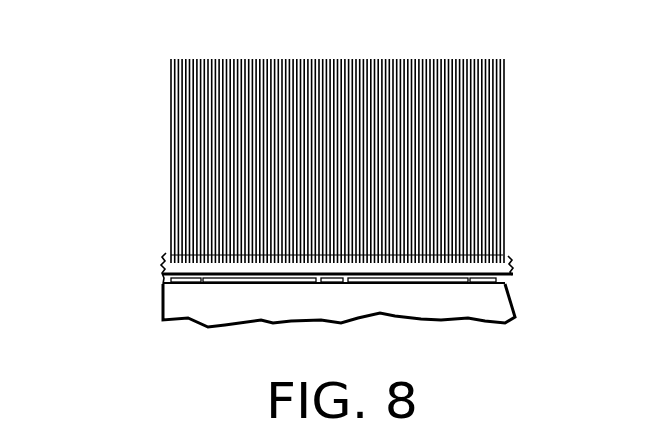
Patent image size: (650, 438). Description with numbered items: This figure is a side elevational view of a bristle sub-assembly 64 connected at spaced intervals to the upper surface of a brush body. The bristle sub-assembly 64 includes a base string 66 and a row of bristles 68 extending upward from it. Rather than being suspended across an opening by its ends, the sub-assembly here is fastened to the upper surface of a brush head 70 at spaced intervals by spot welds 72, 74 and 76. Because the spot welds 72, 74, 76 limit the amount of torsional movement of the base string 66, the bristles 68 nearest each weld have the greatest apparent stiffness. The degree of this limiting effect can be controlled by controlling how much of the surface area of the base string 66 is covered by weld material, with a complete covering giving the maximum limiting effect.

The bristle sub-assembly 64 is at (64, 162).
The base string 66 is at (160, 245).
The row of bristles 68 is at (493, 141).
The brush head 70 is at (217, 320).
The spot weld 72 is at (175, 272).
The spot weld 74 is at (323, 277).
The spot weld 76 is at (473, 276).